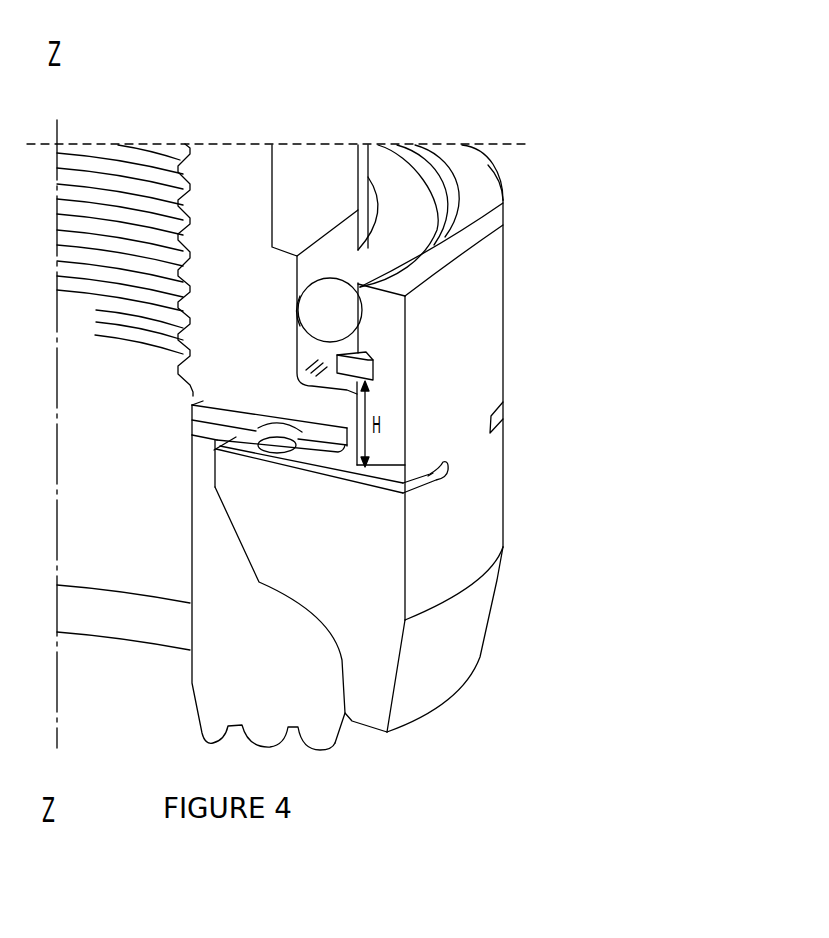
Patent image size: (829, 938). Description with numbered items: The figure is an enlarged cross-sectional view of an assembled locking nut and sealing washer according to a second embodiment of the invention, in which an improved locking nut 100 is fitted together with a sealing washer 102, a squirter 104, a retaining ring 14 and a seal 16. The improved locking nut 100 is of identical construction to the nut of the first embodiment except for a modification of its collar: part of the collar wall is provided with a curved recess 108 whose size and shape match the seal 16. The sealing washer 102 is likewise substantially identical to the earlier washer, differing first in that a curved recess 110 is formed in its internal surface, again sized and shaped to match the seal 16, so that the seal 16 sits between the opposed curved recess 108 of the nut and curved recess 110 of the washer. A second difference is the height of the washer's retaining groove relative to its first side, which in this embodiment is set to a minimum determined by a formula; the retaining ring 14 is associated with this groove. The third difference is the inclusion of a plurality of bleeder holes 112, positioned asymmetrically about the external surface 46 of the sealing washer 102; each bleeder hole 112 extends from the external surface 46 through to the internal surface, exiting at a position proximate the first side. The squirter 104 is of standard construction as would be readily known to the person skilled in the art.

The improved locking nut 100 is at (306, 176).
The sealing washer 102 is at (540, 250).
The external surface 46 is at (490, 338).
The seal 16 is at (318, 303).
The curved recess 108 is at (300, 315).
The curved recess 110 is at (364, 314).
The retaining ring 14 is at (375, 366).
The bleeder holes 112 is at (504, 418).
The squirter 104 is at (248, 428).